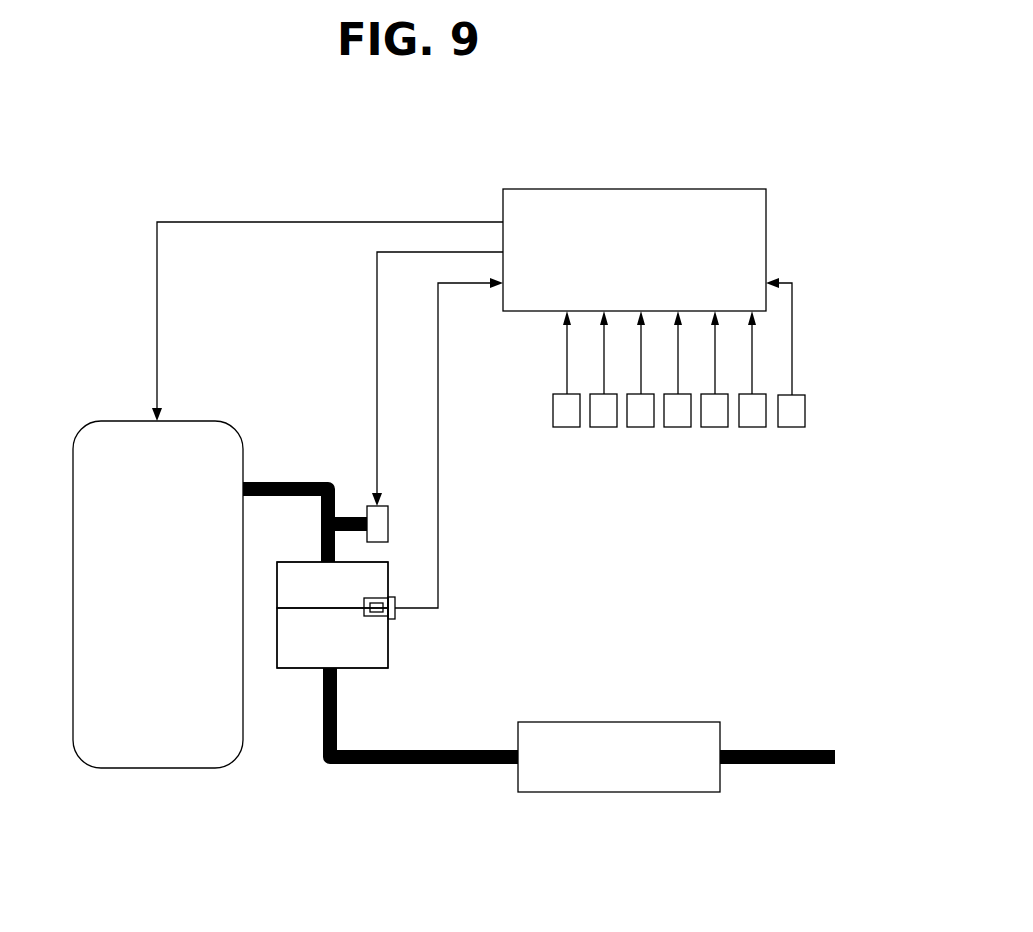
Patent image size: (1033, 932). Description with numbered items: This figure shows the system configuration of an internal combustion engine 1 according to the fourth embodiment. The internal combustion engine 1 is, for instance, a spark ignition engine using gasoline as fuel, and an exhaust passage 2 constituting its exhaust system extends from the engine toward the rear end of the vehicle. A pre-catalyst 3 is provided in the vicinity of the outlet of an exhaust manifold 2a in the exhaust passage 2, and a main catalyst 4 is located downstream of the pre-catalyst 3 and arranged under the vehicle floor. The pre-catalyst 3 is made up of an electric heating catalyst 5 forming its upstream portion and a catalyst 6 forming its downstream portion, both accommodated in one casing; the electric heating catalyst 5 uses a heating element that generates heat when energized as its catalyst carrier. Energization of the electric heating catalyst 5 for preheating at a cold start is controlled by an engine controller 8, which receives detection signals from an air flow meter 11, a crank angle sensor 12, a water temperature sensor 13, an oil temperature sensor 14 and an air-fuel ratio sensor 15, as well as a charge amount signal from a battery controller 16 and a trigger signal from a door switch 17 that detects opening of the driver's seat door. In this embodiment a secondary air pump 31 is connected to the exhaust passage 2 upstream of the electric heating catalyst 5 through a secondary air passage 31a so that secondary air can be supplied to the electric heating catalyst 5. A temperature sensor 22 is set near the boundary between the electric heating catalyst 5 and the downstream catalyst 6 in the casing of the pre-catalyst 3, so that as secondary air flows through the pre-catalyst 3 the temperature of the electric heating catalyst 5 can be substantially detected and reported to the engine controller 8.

The internal combustion engine 1 is at (112, 421).
The exhaust passage 2 is at (413, 767).
The exhaust manifold 2a is at (272, 482).
The pre-catalyst 3 is at (296, 690).
The main catalyst 4 is at (606, 780).
The electric heating catalyst 5 is at (375, 575).
The catalyst 6 is at (380, 643).
The engine controller 8 is at (705, 188).
The air flow meter 11 is at (567, 427).
The crank angle sensor 12 is at (604, 427).
The water temperature sensor 13 is at (641, 427).
The oil temperature sensor 14 is at (678, 427).
The air-fuel ratio sensor 15 is at (715, 427).
The battery controller 16 is at (752, 427).
The door switch 17 is at (792, 427).
The temperature sensor 22 is at (398, 616).
The secondary air pump 31 is at (378, 522).
The secondary air passage 31a is at (347, 517).